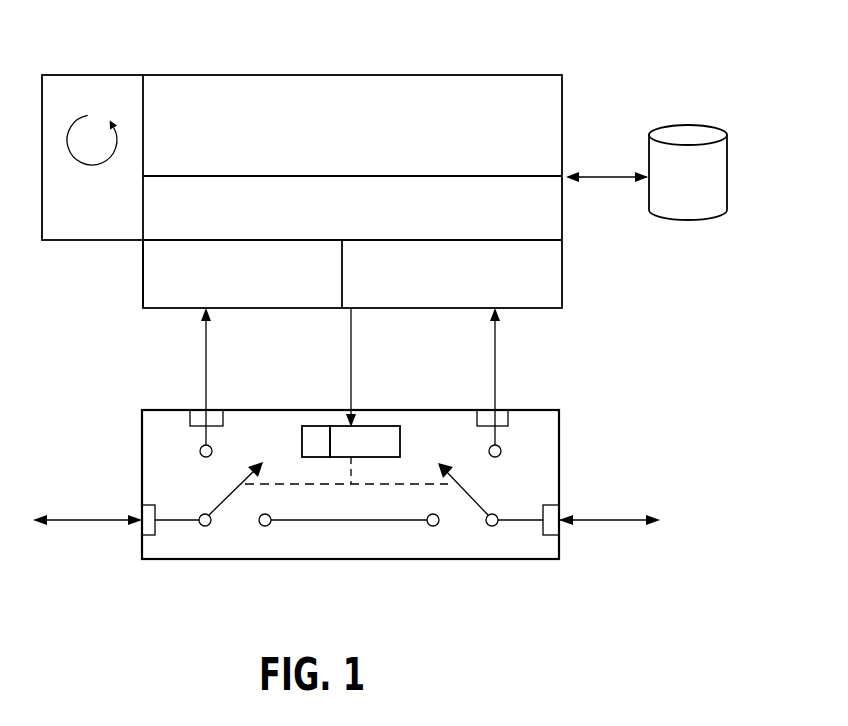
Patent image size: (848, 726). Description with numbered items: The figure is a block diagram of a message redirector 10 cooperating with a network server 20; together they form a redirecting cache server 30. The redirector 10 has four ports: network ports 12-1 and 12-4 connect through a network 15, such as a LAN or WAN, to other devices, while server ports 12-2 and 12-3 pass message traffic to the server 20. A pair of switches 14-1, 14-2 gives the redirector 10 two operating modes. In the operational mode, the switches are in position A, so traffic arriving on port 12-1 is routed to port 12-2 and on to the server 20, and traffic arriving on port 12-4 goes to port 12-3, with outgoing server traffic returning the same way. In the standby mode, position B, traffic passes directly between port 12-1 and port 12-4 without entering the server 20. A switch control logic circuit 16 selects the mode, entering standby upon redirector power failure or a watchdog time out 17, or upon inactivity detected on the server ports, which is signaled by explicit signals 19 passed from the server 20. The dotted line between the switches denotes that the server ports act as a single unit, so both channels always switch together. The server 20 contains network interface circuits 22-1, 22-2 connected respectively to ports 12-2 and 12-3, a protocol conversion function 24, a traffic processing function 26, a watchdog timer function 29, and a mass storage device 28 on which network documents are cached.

The message redirector 10 is at (561, 436).
The network port 12-1 is at (140, 512).
The server port 12-2 is at (198, 408).
The server port 12-3 is at (503, 410).
The network port 12-4 is at (560, 530).
The switch 14-1 is at (222, 505).
The switch 14-2 is at (475, 503).
The network 15 is at (75, 520).
The switch control logic circuit 16 is at (377, 425).
The watchdog time out 17 is at (317, 425).
The explicit signals 19 is at (351, 350).
The network server 20 is at (402, 75).
The network interface circuit 22-1 is at (333, 288).
The network interface circuit 22-2 is at (503, 293).
The protocol conversion function 24 is at (522, 227).
The traffic processing function 26 is at (495, 149).
The mass storage device 28 is at (675, 197).
The watchdog timer function 29 is at (108, 221).
The redirecting cache server 30 is at (586, 86).